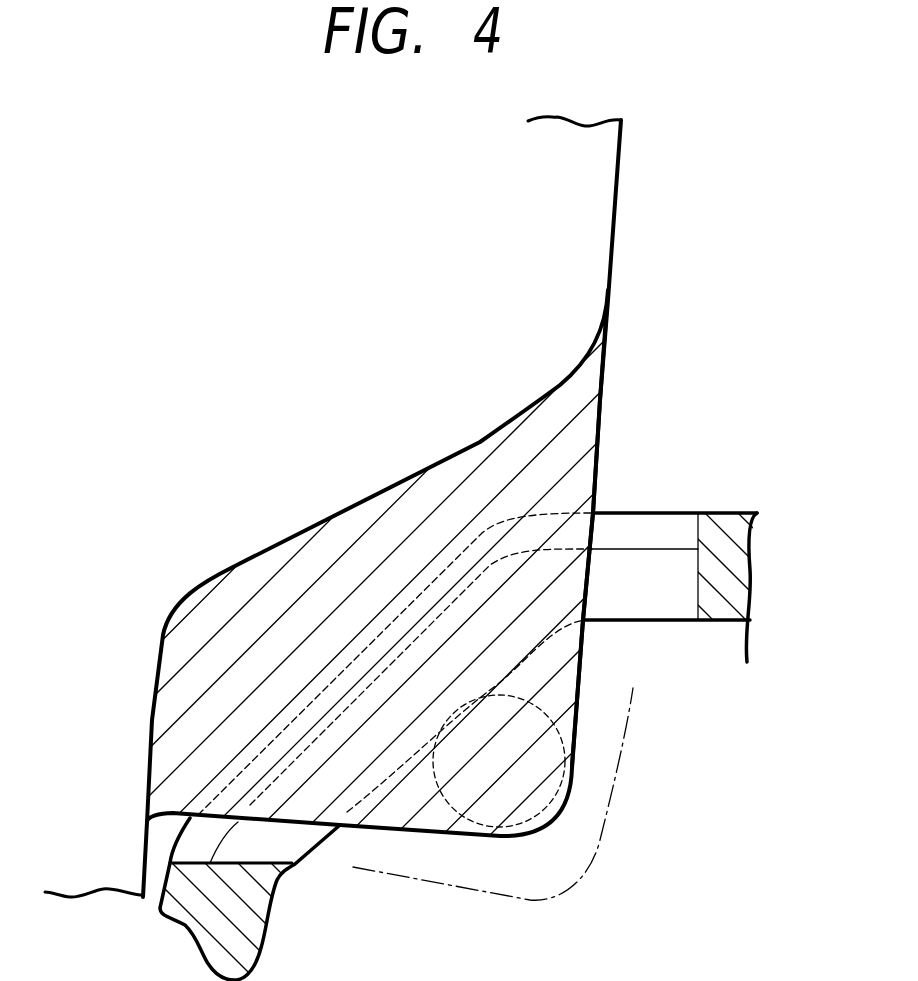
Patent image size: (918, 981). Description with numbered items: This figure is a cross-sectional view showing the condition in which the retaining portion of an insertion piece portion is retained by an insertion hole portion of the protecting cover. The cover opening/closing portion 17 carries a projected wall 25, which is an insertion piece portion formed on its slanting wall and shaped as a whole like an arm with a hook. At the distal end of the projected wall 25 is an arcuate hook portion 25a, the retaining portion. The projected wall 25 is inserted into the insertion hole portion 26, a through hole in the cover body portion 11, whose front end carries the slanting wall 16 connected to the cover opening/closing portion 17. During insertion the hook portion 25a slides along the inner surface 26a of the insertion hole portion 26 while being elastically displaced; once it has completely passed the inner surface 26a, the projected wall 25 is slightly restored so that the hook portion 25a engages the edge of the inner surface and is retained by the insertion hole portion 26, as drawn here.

The cover opening/closing portion 17 is at (614, 249).
The projected wall 25 is at (584, 443).
The hook portion 25a is at (453, 807).
The insertion hole portion 26 is at (647, 527).
The inner surface 26a is at (657, 597).
The cover body portion 11 is at (732, 509).
The slanting wall 16 is at (397, 627).